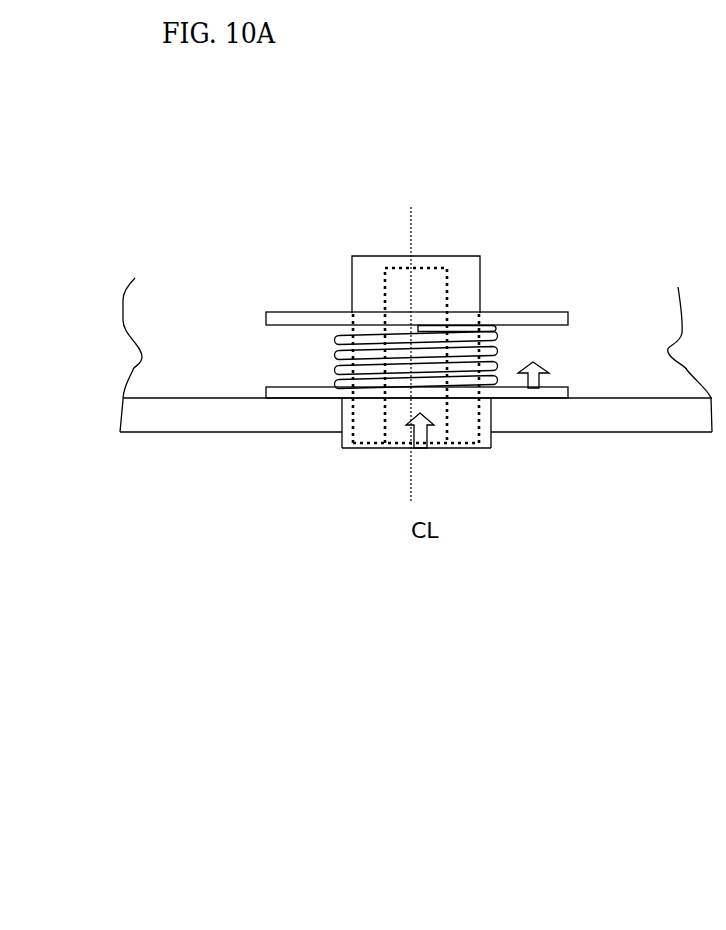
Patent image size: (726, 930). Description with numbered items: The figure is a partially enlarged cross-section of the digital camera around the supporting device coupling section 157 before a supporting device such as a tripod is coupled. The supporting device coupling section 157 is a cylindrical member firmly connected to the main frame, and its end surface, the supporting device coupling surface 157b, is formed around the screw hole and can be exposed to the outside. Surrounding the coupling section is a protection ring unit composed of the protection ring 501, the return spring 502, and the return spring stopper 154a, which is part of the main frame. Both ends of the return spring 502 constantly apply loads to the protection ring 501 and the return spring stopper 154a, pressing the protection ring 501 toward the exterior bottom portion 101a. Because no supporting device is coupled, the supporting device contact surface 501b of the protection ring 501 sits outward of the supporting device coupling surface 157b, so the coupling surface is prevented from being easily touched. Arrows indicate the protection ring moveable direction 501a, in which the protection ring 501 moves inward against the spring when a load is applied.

The exterior bottom portion 101a is at (248, 433).
The return spring stopper 154a is at (290, 318).
The supporting device coupling section 157 is at (378, 430).
The supporting device coupling surface 157b is at (363, 445).
The protection ring 501 is at (487, 448).
The protection ring moveable direction 501a is at (418, 433).
The supporting device contact surface 501b is at (438, 450).
The return spring 502 is at (483, 327).